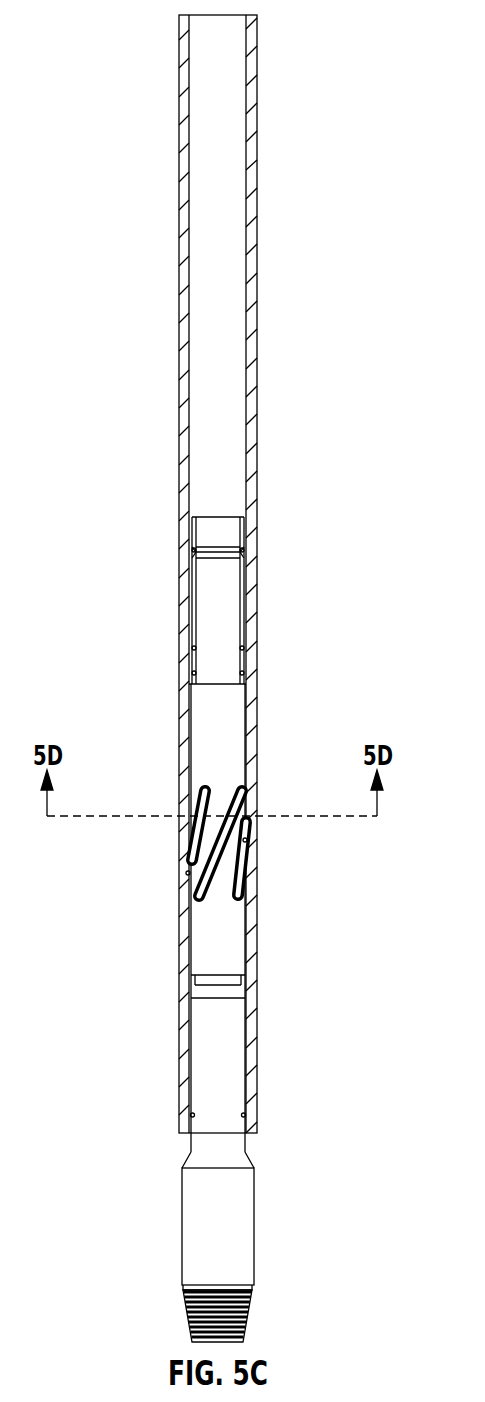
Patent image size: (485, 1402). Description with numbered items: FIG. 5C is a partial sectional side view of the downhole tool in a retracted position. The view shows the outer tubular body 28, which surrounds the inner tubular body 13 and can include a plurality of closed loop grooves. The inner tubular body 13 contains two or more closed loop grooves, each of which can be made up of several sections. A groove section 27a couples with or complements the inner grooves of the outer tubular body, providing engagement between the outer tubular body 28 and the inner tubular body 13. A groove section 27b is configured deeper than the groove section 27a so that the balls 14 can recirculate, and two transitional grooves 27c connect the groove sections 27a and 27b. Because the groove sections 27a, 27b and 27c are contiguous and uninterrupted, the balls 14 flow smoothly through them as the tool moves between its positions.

The outer tubular body 28 is at (258, 310).
The balls 14 is at (217, 812).
The groove section 27a is at (200, 833).
The groove section 27b is at (213, 861).
The transitional grooves 27c is at (206, 786).
The inner tubular body 13 is at (228, 1248).